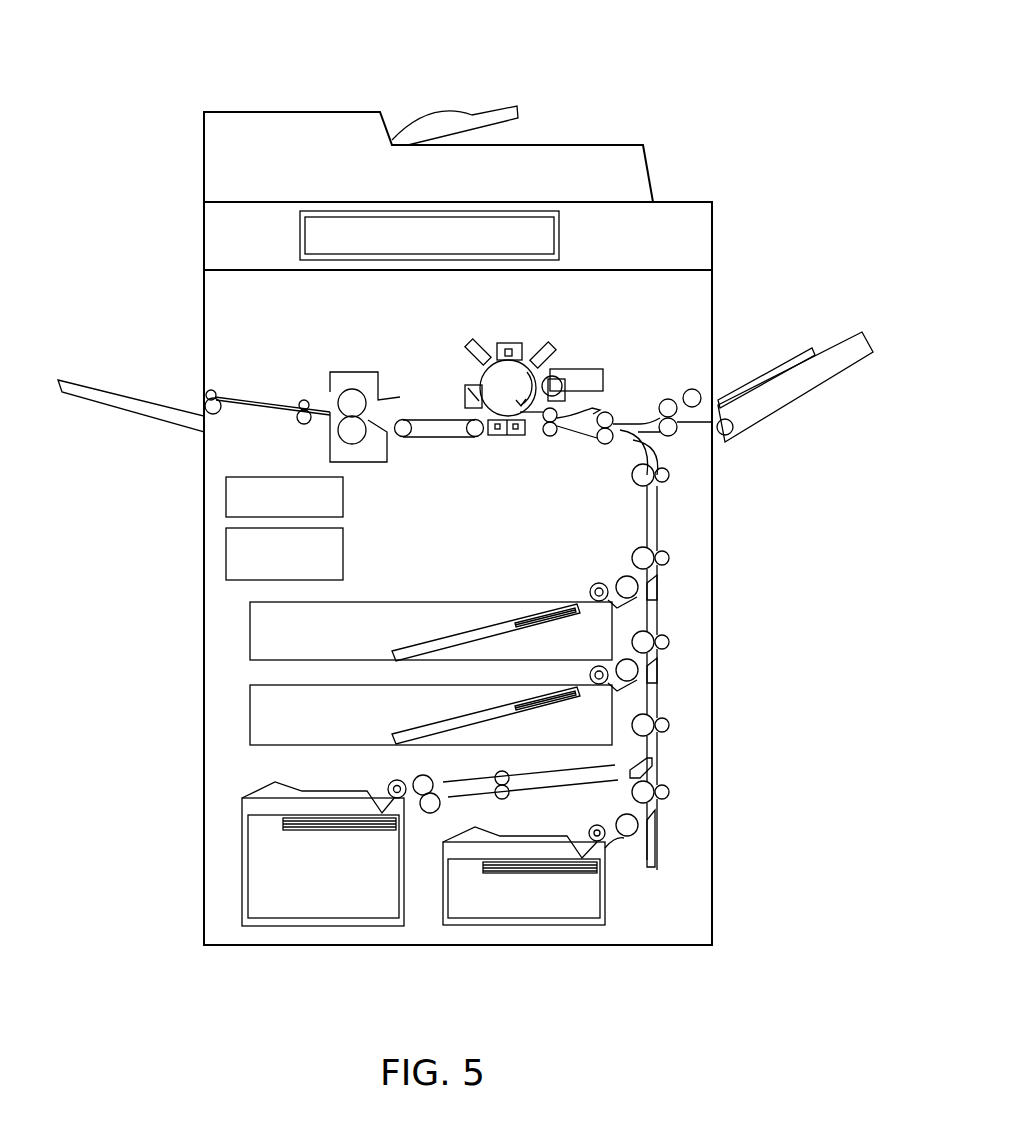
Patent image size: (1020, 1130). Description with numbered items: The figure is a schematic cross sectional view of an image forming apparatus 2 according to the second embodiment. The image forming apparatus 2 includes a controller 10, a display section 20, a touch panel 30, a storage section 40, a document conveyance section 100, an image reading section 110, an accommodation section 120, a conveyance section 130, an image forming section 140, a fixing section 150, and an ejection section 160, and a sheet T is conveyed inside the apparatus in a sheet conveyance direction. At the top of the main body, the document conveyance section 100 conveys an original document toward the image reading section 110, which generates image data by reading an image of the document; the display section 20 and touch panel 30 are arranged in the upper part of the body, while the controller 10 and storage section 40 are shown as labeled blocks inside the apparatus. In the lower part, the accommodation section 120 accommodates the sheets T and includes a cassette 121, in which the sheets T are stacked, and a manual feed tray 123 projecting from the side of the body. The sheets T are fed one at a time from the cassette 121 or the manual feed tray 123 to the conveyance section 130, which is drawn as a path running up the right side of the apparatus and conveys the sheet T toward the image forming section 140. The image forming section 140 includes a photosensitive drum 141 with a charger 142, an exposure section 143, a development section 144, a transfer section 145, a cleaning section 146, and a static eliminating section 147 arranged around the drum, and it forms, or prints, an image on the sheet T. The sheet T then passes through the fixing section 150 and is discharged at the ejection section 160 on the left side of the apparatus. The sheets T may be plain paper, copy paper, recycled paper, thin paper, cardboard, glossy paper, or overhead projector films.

The image forming apparatus 2 is at (489, 76).
The document conveyance section 100 is at (590, 143).
The image reading section 110 is at (712, 222).
The touch panel 30 is at (300, 237).
The display section 20 is at (559, 237).
The ejection section 160 is at (193, 394).
The fixing section 150 is at (377, 470).
The image forming section 140 is at (498, 390).
The photosensitive drum 141 is at (487, 375).
The charger 142 is at (510, 342).
The exposure section 143 is at (552, 345).
The development section 144 is at (603, 380).
The transfer section 145 is at (503, 436).
The cleaning section 146 is at (465, 392).
The static eliminating section 147 is at (470, 341).
The conveyance section 130 is at (690, 680).
The accommodation section 120 is at (475, 649).
The cassette 121 is at (250, 617).
The manual feed tray 123 is at (826, 350).
The controller 10 is at (226, 490).
The storage section 40 is at (226, 548).
The sheet T is at (455, 630).